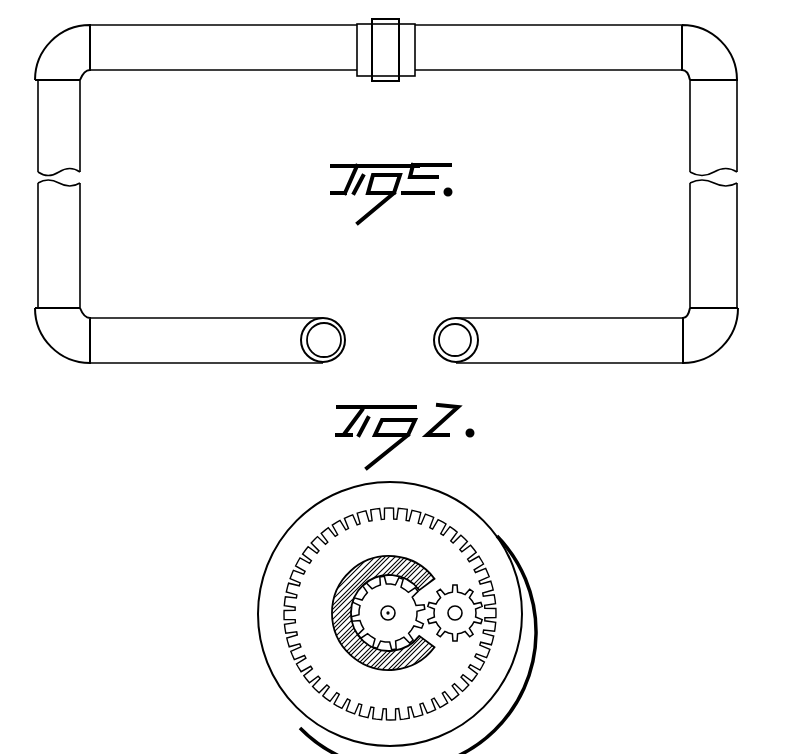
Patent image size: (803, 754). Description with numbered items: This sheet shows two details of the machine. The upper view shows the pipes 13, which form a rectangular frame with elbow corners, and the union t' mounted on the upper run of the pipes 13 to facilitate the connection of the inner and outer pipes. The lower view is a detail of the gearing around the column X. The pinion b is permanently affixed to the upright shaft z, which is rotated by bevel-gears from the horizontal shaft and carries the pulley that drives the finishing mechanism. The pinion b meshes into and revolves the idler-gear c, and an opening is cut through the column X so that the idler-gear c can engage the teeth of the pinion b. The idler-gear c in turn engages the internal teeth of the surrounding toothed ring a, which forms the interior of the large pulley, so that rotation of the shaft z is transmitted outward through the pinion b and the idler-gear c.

In FIG. 5, the pipes 13 is at (386, 194).
In FIG. 5, the union t' is at (386, 50).
In FIG. 8, the internally toothed ring gear casing a is at (510, 655).
In FIG. 8, the column X is at (380, 558).
In FIG. 8, the pinion b is at (388, 613).
In FIG. 8, the upright shaft z is at (388, 623).
In FIG. 8, the idler-gear c is at (455, 613).